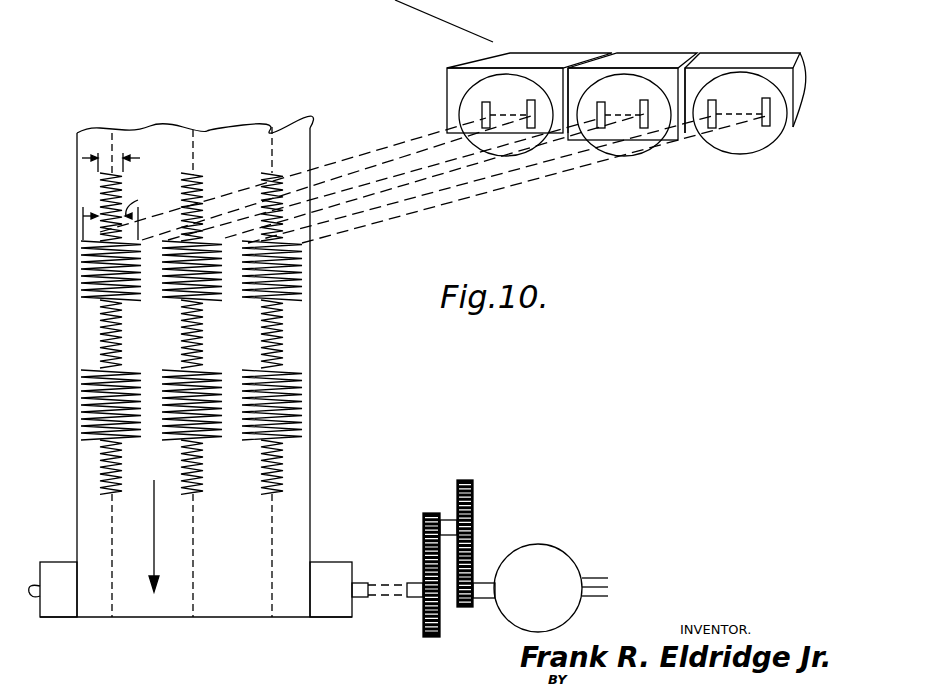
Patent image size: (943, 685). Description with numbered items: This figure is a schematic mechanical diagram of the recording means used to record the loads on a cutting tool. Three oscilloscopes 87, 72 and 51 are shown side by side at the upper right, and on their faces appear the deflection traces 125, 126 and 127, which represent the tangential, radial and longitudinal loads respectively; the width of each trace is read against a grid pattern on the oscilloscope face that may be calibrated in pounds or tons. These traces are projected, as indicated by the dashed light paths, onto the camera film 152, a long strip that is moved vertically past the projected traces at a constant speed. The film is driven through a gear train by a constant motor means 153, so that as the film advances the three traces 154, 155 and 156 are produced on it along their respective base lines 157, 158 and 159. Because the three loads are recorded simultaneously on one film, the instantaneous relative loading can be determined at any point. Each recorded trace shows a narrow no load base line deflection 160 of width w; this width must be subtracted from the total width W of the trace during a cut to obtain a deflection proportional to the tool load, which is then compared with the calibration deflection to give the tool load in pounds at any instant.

The oscilloscope 51 is at (767, 60).
The oscilloscope 72 is at (690, 48).
The oscilloscope 87 is at (500, 62).
The trace 125 is at (734, 108).
The trace 126 is at (622, 110).
The trace 127 is at (506, 112).
The camera film 152 is at (310, 352).
The constant motor means 153 is at (543, 556).
The trace 154 is at (310, 275).
The trace 155 is at (182, 375).
The trace 156 is at (82, 277).
The base line 157 is at (272, 597).
The base line 158 is at (193, 597).
The base line 159 is at (112, 597).
The no load base line deflection 160 is at (100, 188).